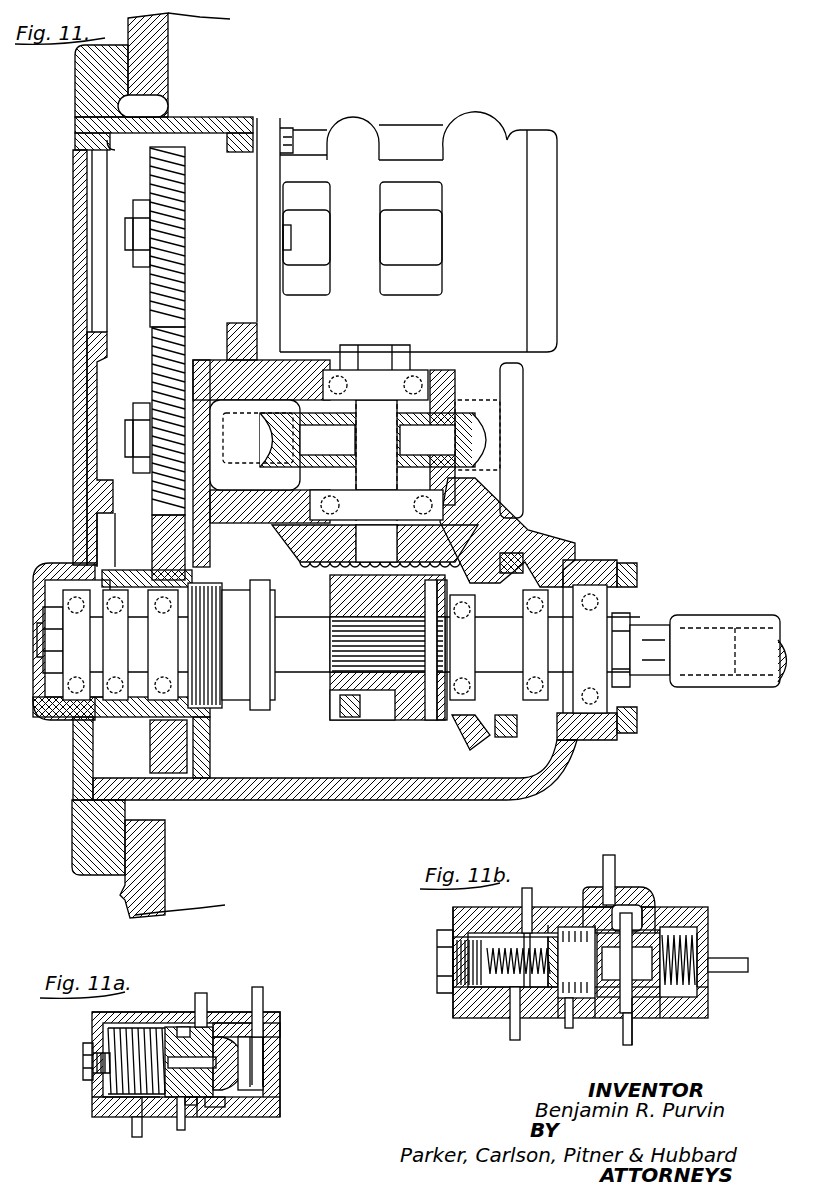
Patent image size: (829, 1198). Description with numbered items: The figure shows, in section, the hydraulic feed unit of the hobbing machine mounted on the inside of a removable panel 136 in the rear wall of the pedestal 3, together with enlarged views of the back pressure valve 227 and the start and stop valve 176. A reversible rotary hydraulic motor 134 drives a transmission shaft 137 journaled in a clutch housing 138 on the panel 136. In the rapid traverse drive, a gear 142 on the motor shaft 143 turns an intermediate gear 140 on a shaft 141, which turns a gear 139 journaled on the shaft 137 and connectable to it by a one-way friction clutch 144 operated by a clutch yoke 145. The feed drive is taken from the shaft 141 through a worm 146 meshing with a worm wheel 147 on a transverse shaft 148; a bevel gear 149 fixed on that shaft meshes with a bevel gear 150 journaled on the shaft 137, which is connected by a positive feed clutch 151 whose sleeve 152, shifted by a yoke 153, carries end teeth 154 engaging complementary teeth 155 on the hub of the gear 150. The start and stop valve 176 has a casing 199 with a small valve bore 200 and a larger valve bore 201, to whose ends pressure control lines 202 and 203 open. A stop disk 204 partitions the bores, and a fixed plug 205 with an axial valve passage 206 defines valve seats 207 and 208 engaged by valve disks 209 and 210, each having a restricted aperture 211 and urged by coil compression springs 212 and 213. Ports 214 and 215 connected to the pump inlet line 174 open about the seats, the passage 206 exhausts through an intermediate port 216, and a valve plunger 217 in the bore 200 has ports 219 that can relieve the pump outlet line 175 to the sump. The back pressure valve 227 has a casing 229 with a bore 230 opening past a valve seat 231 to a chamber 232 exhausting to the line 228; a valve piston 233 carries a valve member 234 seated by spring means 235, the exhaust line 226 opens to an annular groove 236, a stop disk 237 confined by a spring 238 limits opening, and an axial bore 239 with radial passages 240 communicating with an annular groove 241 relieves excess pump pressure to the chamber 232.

In FIG. 11, the pedestal 3 is at (125, 895).
In FIG. 11, the hydraulic motor 134 is at (557, 240).
In FIG. 11, the removable panel 136 is at (80, 80).
In FIG. 11, the transmission shaft 137 is at (638, 628).
In FIG. 11, the clutch housing 138 is at (560, 765).
In FIG. 11, the gear 139 is at (153, 542).
In FIG. 11, the intermediate gear 140 is at (160, 369).
In FIG. 11, the shaft 141 is at (125, 438).
In FIG. 11, the gear 142 is at (150, 166).
In FIG. 11, the motor shaft 143 is at (125, 228).
In FIG. 11, the rapid traverse one-way friction clutch 144 is at (215, 585).
In FIG. 11, the clutch yoke 145 is at (262, 712).
In FIG. 11, the worm 146 is at (376, 345).
In FIG. 11, the worm wheel 147 is at (480, 440).
In FIG. 11, the transverse shaft 148 is at (290, 540).
In FIG. 11, the bevel gear 149 is at (512, 530).
In FIG. 11, the bevel gear 150 is at (545, 553).
In FIG. 11, the positive feed clutch 151 is at (442, 722).
In FIG. 11, the sleeve 152 is at (370, 722).
In FIG. 11, the yoke 153 is at (360, 722).
In FIG. 11, the end teeth 154 is at (430, 722).
In FIG. 11, the complementary teeth 155 is at (458, 725).
In FIG. 11B, the inlet line 174 is at (615, 866).
In FIG. 11A, the pressure outlet line 175 is at (272, 970).
In FIG. 11B, the pressure outlet line 175 is at (522, 901).
In FIG. 11B, the start and stop valve 176 is at (650, 888).
In FIG. 11B, the casing 199 is at (708, 909).
In FIG. 11B, the valve bore 200 is at (455, 921).
In FIG. 11B, the valve bore 201 is at (670, 916).
In FIG. 11B, the pressure control line 202 is at (598, 1000).
In FIG. 11B, the pressure control line 203 is at (725, 958).
In FIG. 11B, the stop disk 204 is at (568, 1029).
In FIG. 11B, the plug 205 is at (650, 1011).
In FIG. 11B, the axial valve passage 206 is at (625, 1046).
In FIG. 11B, the valve seat 207 is at (596, 1019).
In FIG. 11B, the valve seat 208 is at (660, 1015).
In FIG. 11B, the valve disk 209 is at (590, 1021).
In FIG. 11B, the valve disk 210 is at (675, 1006).
In FIG. 11B, the restricted aperture 211 is at (580, 901).
In FIG. 11B, the coil compression spring 212 is at (573, 962).
In FIG. 11B, the coil compression spring 213 is at (710, 986).
In FIG. 11B, the port 214 is at (600, 891).
In FIG. 11B, the port 215 is at (655, 891).
In FIG. 11B, the intermediate port 216 is at (634, 1046).
In FIG. 11B, the valve plunger 217 is at (518, 1041).
In FIG. 11B, the ports 219 is at (505, 990).
In FIG. 11A, the exhaust line 226 is at (198, 1117).
In FIG. 11A, the back pressure valve 227 is at (85, 1028).
In FIG. 11A, the line 228 is at (133, 1131).
In FIG. 11A, the casing 229 is at (282, 1021).
In FIG. 11A, the bore 230 is at (262, 1086).
In FIG. 11A, the valve seat 231 is at (178, 1028).
In FIG. 11A, the chamber 232 is at (95, 1092).
In FIG. 11A, the valve piston 233 is at (268, 1106).
In FIG. 11A, the valve member 234 is at (180, 1135).
In FIG. 11A, the spring means 235 is at (163, 1024).
In FIG. 11A, the annular groove 236 is at (203, 997).
In FIG. 11A, the stop disk 237 is at (150, 1117).
In FIG. 11A, the spring 238 is at (100, 1118).
In FIG. 11A, the axial bore 239 is at (220, 1108).
In FIG. 11A, the radial passages 240 is at (255, 1030).
In FIG. 11A, the annular groove 241 is at (190, 1108).